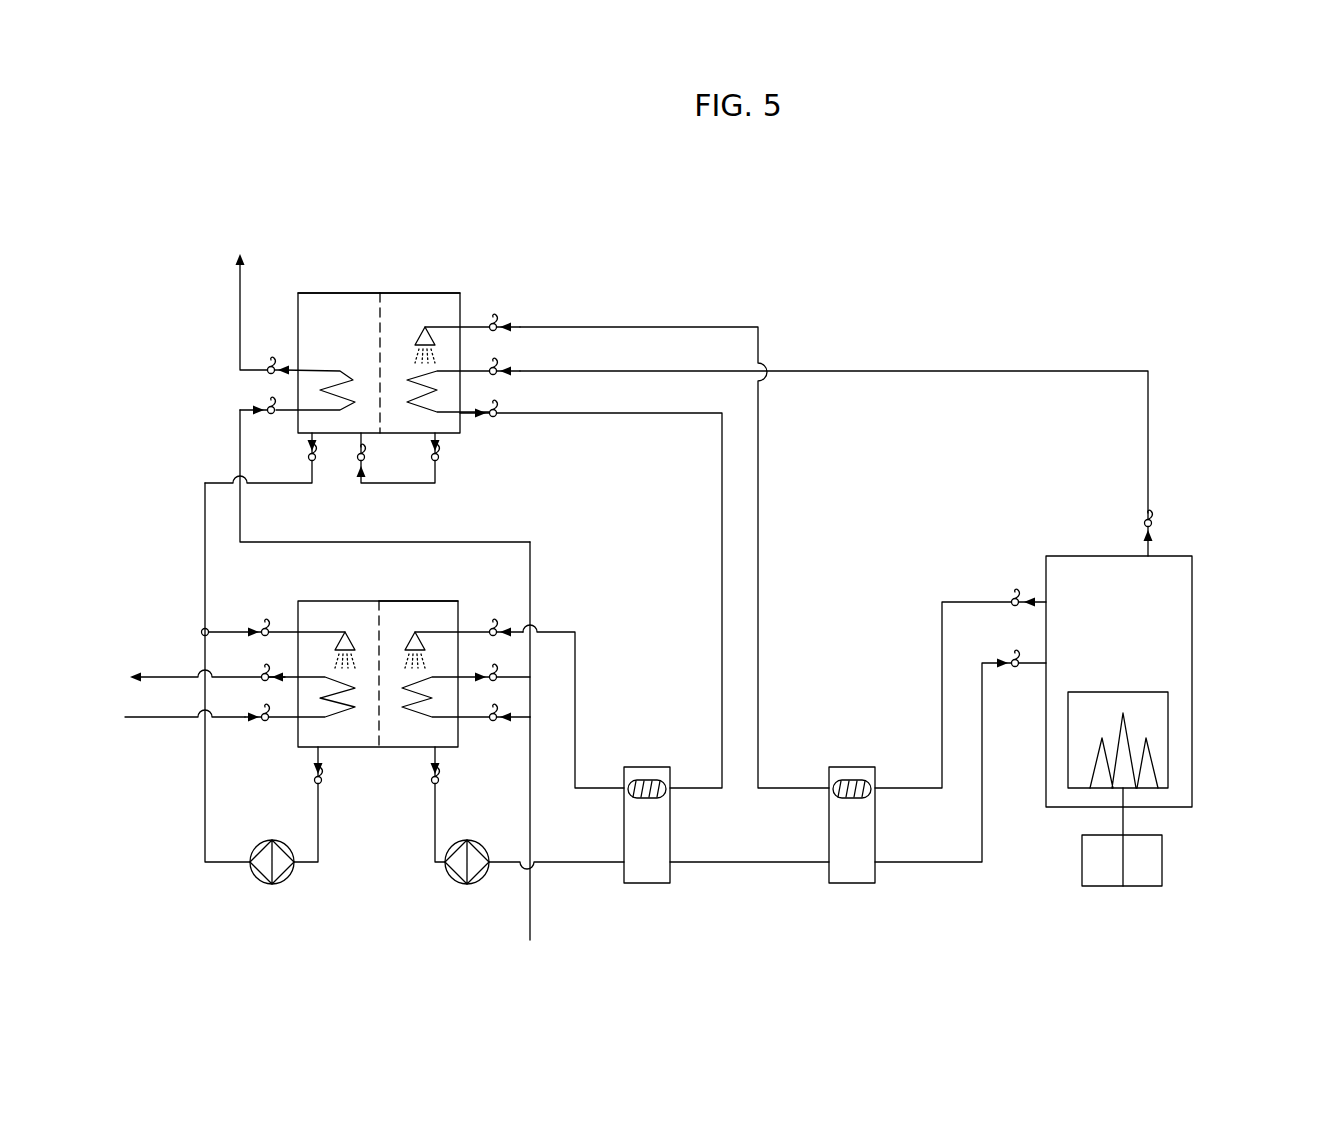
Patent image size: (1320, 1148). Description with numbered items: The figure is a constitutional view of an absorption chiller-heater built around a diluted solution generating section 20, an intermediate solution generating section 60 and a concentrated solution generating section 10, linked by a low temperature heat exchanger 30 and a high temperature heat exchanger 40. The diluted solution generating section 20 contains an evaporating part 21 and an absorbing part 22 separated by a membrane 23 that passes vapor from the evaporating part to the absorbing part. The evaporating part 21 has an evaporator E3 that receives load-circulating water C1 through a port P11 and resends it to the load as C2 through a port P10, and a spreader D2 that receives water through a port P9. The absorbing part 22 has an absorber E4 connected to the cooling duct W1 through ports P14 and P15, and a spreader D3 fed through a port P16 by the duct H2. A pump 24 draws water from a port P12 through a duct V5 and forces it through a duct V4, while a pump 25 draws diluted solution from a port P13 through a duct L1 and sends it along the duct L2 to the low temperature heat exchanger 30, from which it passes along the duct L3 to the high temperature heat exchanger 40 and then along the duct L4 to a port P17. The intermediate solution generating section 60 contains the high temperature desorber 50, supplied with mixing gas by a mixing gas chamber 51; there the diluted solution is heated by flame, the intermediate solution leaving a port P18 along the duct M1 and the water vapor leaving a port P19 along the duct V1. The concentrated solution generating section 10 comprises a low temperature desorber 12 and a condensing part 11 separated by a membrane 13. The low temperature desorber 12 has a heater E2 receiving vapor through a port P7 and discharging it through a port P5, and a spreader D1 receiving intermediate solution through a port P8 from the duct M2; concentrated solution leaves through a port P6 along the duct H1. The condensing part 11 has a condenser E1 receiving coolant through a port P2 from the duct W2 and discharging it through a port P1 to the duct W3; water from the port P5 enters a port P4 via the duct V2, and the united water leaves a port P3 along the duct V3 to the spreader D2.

The concentrated solution generating section 10 is at (470, 294).
The condensing part 11 is at (347, 295).
The low temperature desorber 12 is at (407, 297).
The membrane 13 is at (380, 317).
The diluted solution generating section 20 is at (487, 577).
The evaporating part 21 is at (340, 605).
The absorbing part 22 is at (399, 607).
The membrane 23 is at (379, 625).
The pump 24 is at (258, 880).
The pump 25 is at (483, 880).
The low temperature heat exchanger 30 is at (628, 767).
The high temperature heat exchanger 40 is at (836, 767).
The high temperature desorber 50 is at (1192, 698).
The mixing gas chamber 51 is at (1162, 861).
The intermediate solution generating section 60 is at (1212, 546).
The port P1 is at (272, 353).
The port P2 is at (264, 394).
The port P3 is at (308, 457).
The port P4 is at (365, 457).
The port P5 is at (439, 457).
The port P6 is at (493, 399).
The port P7 is at (508, 355).
The port P8 is at (508, 311).
The port P9 is at (263, 629).
The port P10 is at (272, 661).
The port P11 is at (270, 702).
The port P12 is at (314, 780).
The port P13 is at (439, 780).
The port P14 is at (503, 703).
The port P15 is at (502, 661).
The port P16 is at (499, 614).
The port P17 is at (1016, 659).
The port P18 is at (1016, 598).
The port P19 is at (1146, 522).
The condenser E1 is at (340, 371).
The heater E2 is at (407, 380).
The evaporator E3 is at (348, 722).
The absorber E4 is at (408, 722).
The spreader D1 is at (424, 325).
The spreader D2 is at (343, 632).
The spreader D3 is at (407, 640).
The cooling duct W1 is at (530, 813).
The duct W2 is at (531, 578).
The duct W3 is at (239, 322).
The duct V1 is at (893, 372).
The duct V2 is at (400, 483).
The duct V3 is at (283, 483).
The duct V4 is at (205, 793).
The duct V5 is at (318, 830).
The load-circulating water inlet C1 is at (164, 719).
The load-circulating water outlet C2 is at (171, 674).
The duct H1 is at (722, 628).
The duct H2 is at (578, 662).
The duct M1 is at (942, 690).
The duct M2 is at (758, 640).
The duct L1 is at (435, 836).
The duct L2 is at (572, 863).
The duct L3 is at (750, 863).
The duct L4 is at (950, 863).